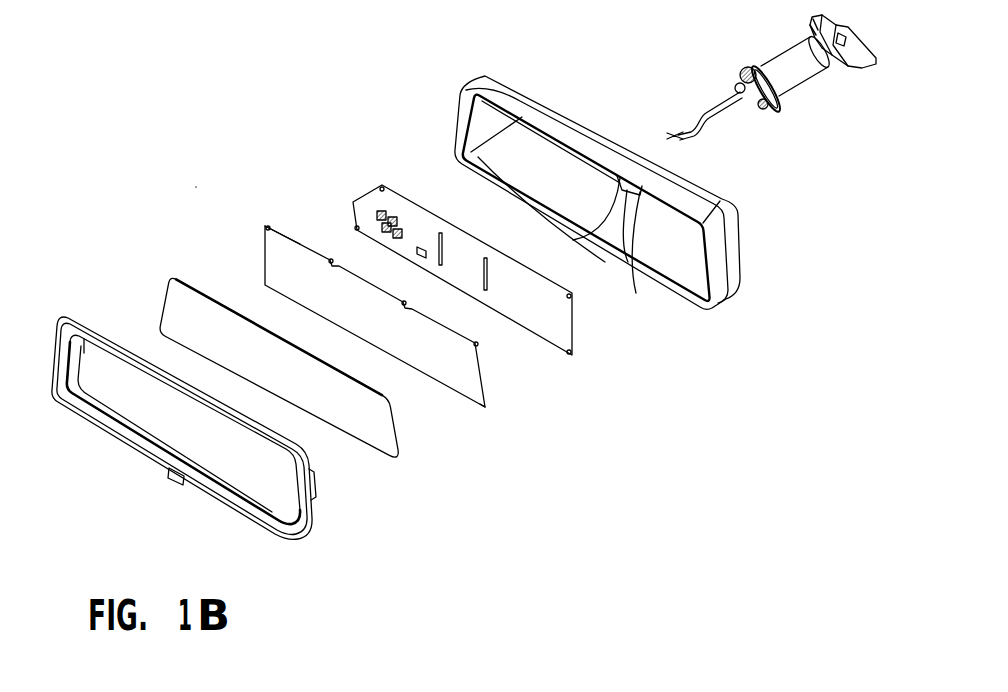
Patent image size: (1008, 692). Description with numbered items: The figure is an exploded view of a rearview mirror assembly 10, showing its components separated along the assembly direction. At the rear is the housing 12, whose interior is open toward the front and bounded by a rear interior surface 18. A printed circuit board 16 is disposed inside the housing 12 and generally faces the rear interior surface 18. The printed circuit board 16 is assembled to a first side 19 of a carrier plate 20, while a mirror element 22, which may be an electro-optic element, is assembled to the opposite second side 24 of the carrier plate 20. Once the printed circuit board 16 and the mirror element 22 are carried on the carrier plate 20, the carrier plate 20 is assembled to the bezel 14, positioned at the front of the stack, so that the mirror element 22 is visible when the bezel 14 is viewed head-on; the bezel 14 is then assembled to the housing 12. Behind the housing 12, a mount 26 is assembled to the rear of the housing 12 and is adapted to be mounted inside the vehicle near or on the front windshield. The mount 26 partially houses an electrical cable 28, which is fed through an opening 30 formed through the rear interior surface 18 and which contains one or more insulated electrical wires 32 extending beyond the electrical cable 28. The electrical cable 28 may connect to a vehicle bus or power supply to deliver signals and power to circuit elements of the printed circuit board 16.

The rearview mirror assembly 10 is at (196, 187).
The housing 12 is at (748, 284).
The bezel 14 is at (203, 487).
The printed circuit board 16 is at (567, 336).
The rear interior surface 18 is at (554, 162).
The first side 19 is at (297, 257).
The carrier plate 20 is at (487, 411).
The mirror element 22 is at (255, 382).
The second side 24 is at (354, 320).
The mount 26 is at (798, 73).
The electrical cable 28 is at (723, 110).
The opening 30 is at (636, 293).
The insulated electrical wires 32 is at (673, 132).